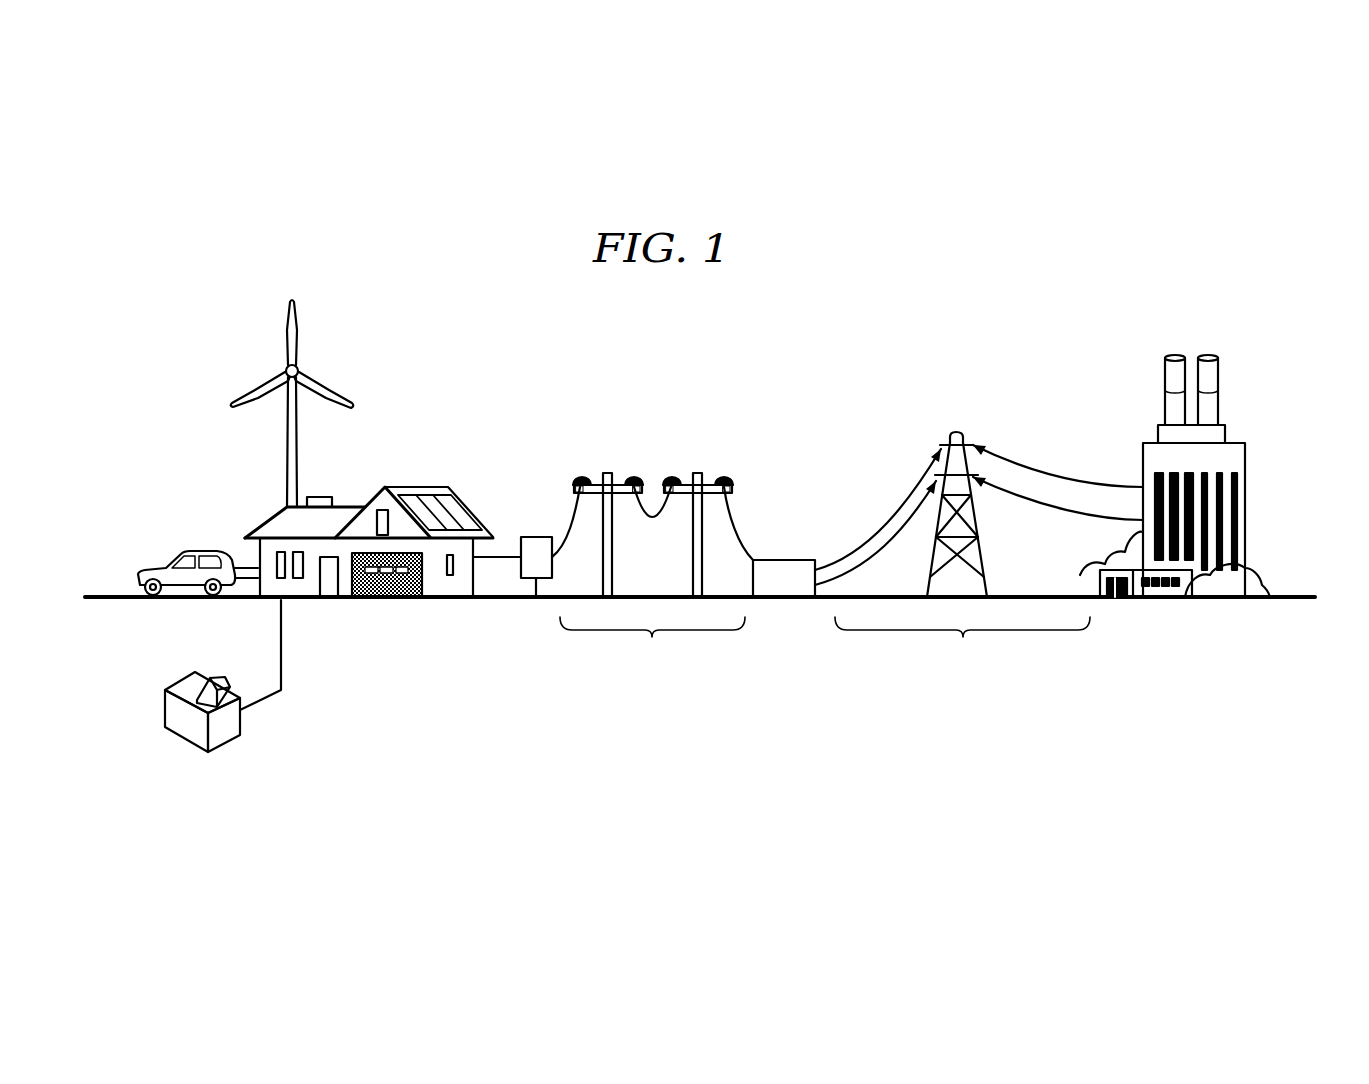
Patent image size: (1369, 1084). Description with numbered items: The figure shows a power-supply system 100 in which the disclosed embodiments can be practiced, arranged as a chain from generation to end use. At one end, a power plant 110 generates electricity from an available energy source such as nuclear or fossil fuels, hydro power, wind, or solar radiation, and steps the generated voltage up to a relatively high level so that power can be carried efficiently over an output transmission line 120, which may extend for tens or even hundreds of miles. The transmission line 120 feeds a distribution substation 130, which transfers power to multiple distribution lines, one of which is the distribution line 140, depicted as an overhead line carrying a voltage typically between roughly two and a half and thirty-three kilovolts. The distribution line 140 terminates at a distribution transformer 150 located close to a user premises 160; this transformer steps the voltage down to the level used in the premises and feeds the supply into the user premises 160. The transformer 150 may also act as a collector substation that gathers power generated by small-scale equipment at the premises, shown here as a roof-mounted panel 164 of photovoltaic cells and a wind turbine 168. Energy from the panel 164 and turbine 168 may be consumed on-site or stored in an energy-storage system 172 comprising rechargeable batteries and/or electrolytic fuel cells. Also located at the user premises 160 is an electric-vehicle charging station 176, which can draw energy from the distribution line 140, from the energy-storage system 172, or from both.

The power-supply system 100 is at (677, 316).
The power plant 110 is at (1238, 458).
The output transmission line 120 is at (979, 554).
The distribution substation 130 is at (781, 558).
The distribution line 140 is at (652, 574).
The distribution transformer 150 is at (537, 537).
The user premises 160 is at (425, 426).
The roof-mounted panel 164 is at (457, 502).
The wind turbine 168 is at (300, 368).
The energy-storage system 172 is at (192, 725).
The electric-vehicle charging station 176 is at (244, 567).